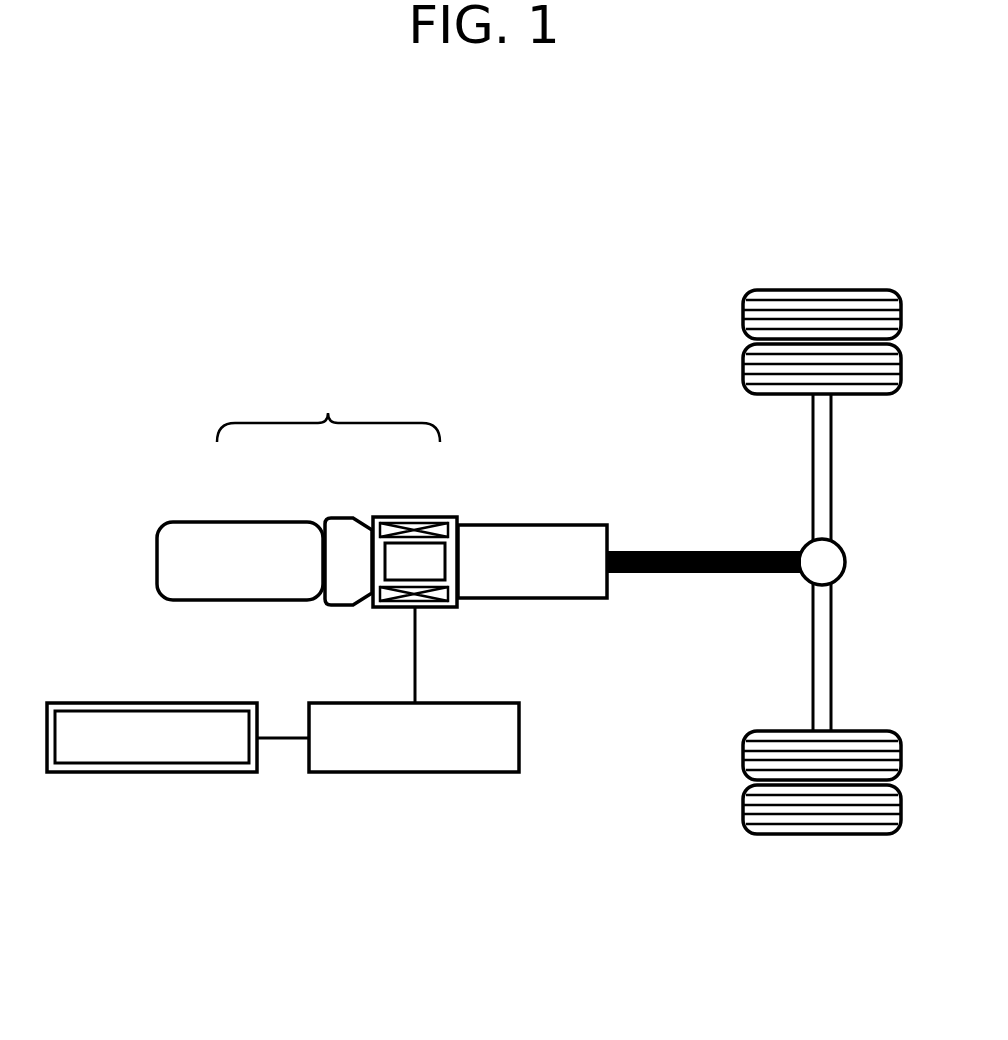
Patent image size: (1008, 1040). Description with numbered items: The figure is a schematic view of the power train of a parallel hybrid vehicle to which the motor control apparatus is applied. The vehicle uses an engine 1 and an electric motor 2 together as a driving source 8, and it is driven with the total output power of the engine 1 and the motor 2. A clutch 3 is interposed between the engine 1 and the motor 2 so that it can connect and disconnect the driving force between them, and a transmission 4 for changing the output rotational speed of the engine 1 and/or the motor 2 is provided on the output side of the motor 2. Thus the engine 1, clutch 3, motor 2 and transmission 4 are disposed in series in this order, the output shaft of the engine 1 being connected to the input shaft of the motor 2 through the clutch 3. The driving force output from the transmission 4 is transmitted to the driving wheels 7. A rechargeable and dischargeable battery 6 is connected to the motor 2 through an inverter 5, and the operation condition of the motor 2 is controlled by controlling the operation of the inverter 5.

The engine 1 is at (243, 522).
The electric motor 2 is at (415, 517).
The clutch 3 is at (342, 606).
The transmission 4 is at (531, 525).
The inverter 5 is at (415, 773).
The battery 6 is at (152, 773).
The driving wheels 7 is at (822, 290).
The driving source 8 is at (328, 406).